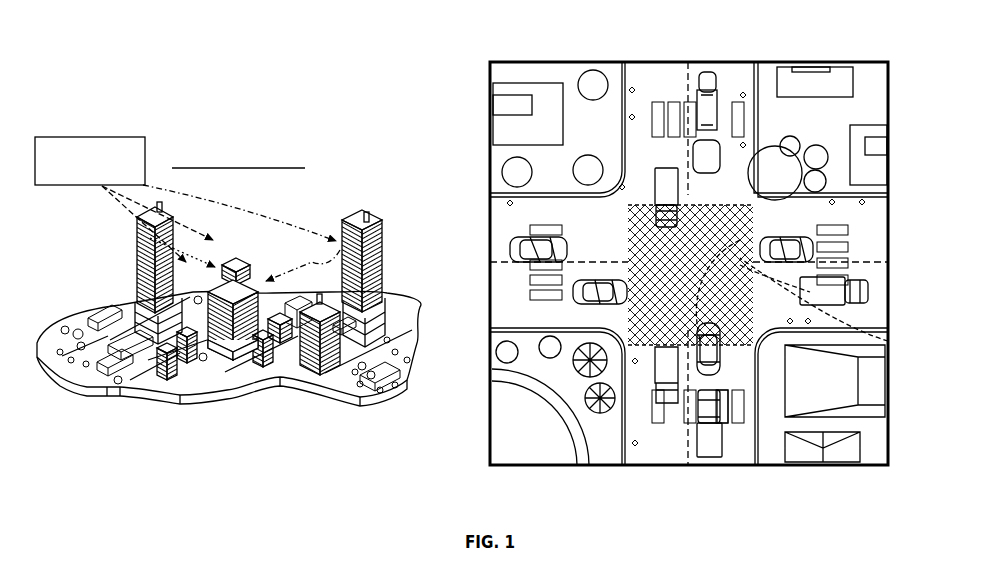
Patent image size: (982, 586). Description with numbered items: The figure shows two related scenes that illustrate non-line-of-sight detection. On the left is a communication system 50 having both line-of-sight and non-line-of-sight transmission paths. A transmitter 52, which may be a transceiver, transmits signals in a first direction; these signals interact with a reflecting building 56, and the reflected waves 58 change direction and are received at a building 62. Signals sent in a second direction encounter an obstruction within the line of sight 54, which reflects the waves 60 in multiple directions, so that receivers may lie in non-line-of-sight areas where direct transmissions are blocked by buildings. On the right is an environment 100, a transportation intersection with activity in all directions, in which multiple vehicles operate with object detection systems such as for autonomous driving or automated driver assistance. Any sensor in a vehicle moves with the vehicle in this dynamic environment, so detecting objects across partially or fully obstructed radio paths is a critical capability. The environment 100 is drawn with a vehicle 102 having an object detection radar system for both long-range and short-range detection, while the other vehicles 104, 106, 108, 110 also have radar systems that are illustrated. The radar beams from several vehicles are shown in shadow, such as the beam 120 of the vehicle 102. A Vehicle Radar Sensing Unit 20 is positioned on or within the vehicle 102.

The communication system 50 is at (137, 36).
The transmitter 52 is at (117, 137).
The LOS obstruction 54 is at (135, 262).
The reflecting building 56 is at (367, 213).
The reflected waves 58 is at (377, 228).
The waves 60 is at (215, 253).
The building 62 is at (228, 364).
The environment 100 is at (468, 31).
The vehicle 110 is at (667, 170).
The vehicle 104 is at (817, 245).
The vehicle 108 is at (568, 300).
The beam 120 is at (888, 341).
The Vehicle Radar Sensing Unit (RSU) 20 is at (695, 342).
The vehicle 106 is at (709, 452).
The vehicle 102 is at (720, 397).